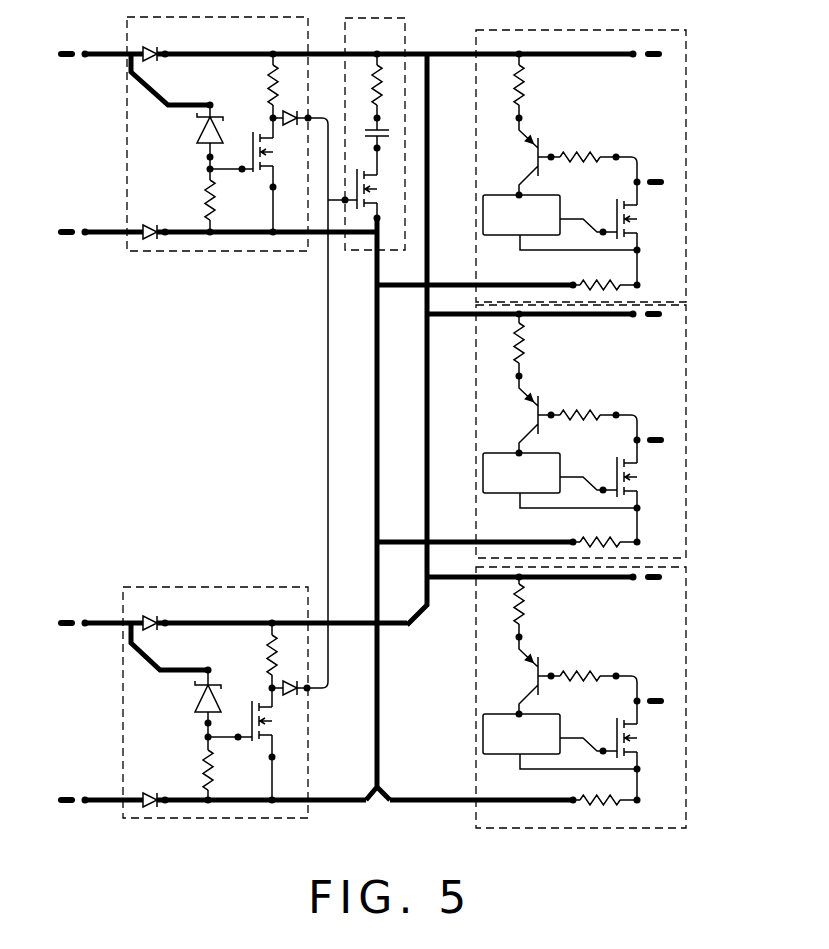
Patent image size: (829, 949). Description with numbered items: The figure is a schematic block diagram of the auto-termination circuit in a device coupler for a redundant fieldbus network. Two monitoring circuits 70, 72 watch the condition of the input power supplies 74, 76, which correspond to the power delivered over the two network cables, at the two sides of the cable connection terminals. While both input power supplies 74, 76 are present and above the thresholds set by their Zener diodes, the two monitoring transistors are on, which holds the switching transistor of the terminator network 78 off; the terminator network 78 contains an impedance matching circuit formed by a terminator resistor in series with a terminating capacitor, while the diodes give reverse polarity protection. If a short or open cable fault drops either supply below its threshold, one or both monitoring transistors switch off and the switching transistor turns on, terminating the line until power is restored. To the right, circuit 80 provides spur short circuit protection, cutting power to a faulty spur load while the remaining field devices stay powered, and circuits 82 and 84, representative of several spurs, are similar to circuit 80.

The monitoring circuit 70 is at (227, 251).
The monitoring circuit 72 is at (232, 587).
The input power supply 74 is at (52, 77).
The input power supply 76 is at (52, 643).
The terminator network 78 is at (360, 250).
The spur short circuit protection circuit 80 is at (681, 110).
The spur short circuit protection circuit 82 is at (680, 376).
The spur short circuit protection circuit 84 is at (680, 628).